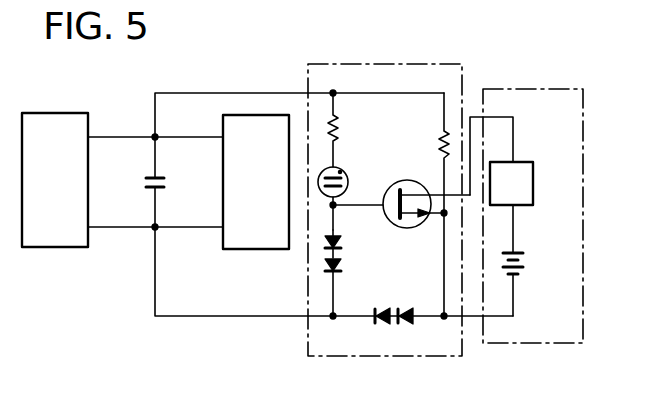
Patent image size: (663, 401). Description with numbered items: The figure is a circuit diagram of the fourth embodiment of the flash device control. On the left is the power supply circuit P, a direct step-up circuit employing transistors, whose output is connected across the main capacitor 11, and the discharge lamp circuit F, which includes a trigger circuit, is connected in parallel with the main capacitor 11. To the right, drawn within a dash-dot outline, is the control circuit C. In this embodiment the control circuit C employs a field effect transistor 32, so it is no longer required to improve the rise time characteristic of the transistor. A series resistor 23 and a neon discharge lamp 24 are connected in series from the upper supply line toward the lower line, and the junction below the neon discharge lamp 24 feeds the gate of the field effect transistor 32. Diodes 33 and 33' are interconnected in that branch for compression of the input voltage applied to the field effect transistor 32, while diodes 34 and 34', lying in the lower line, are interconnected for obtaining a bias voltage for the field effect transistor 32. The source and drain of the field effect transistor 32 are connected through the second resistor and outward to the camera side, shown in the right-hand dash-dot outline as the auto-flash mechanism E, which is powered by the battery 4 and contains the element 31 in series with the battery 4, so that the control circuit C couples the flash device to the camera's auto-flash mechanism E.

The power supply circuit P is at (50, 113).
The discharge lamp circuit F is at (249, 115).
The control circuit C is at (417, 64).
The auto-flash mechanism E is at (519, 89).
The main capacitor 11 is at (160, 176).
The series resistor 23 is at (338, 125).
The neon discharge lamp 24 is at (345, 172).
The field effect transistor 32 is at (407, 180).
The diode 33 is at (358, 242).
The diode 33' is at (362, 285).
The diode 34 is at (363, 330).
The diode 34' is at (432, 330).
The indicator 31 is at (511, 183).
The battery 4 is at (515, 253).